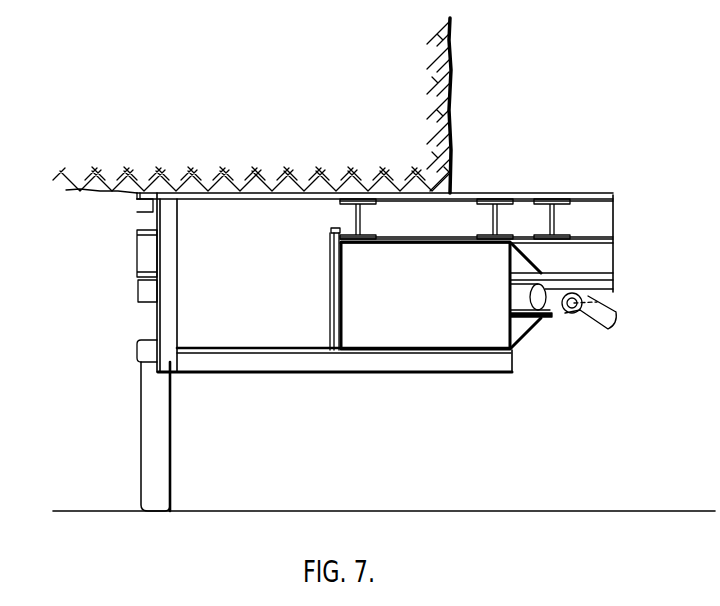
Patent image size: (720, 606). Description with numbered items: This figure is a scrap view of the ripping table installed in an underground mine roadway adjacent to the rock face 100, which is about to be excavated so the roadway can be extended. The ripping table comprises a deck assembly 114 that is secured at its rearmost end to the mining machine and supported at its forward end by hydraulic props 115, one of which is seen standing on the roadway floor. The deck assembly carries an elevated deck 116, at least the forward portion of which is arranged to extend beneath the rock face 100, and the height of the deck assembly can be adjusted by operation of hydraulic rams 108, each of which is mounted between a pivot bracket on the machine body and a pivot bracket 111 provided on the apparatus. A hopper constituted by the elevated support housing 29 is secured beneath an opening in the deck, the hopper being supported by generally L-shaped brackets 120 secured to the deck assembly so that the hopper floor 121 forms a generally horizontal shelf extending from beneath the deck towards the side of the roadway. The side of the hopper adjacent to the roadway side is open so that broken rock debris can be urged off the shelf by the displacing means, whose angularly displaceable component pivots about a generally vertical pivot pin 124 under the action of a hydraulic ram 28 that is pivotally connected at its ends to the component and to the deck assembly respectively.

The rock face 100 is at (300, 99).
The elevated deck 116 is at (473, 193).
The deck assembly 114 is at (549, 189).
The hopper floor 121 is at (240, 347).
The L-shaped brackets 120 is at (257, 362).
The hydraulic props 115 is at (145, 403).
The vertical pivot pin 124 is at (332, 230).
The elevated support housing 29 is at (315, 336).
The hydraulic ram 28 is at (520, 302).
The pivot bracket 111 is at (607, 297).
The hydraulic rams 108 is at (607, 327).